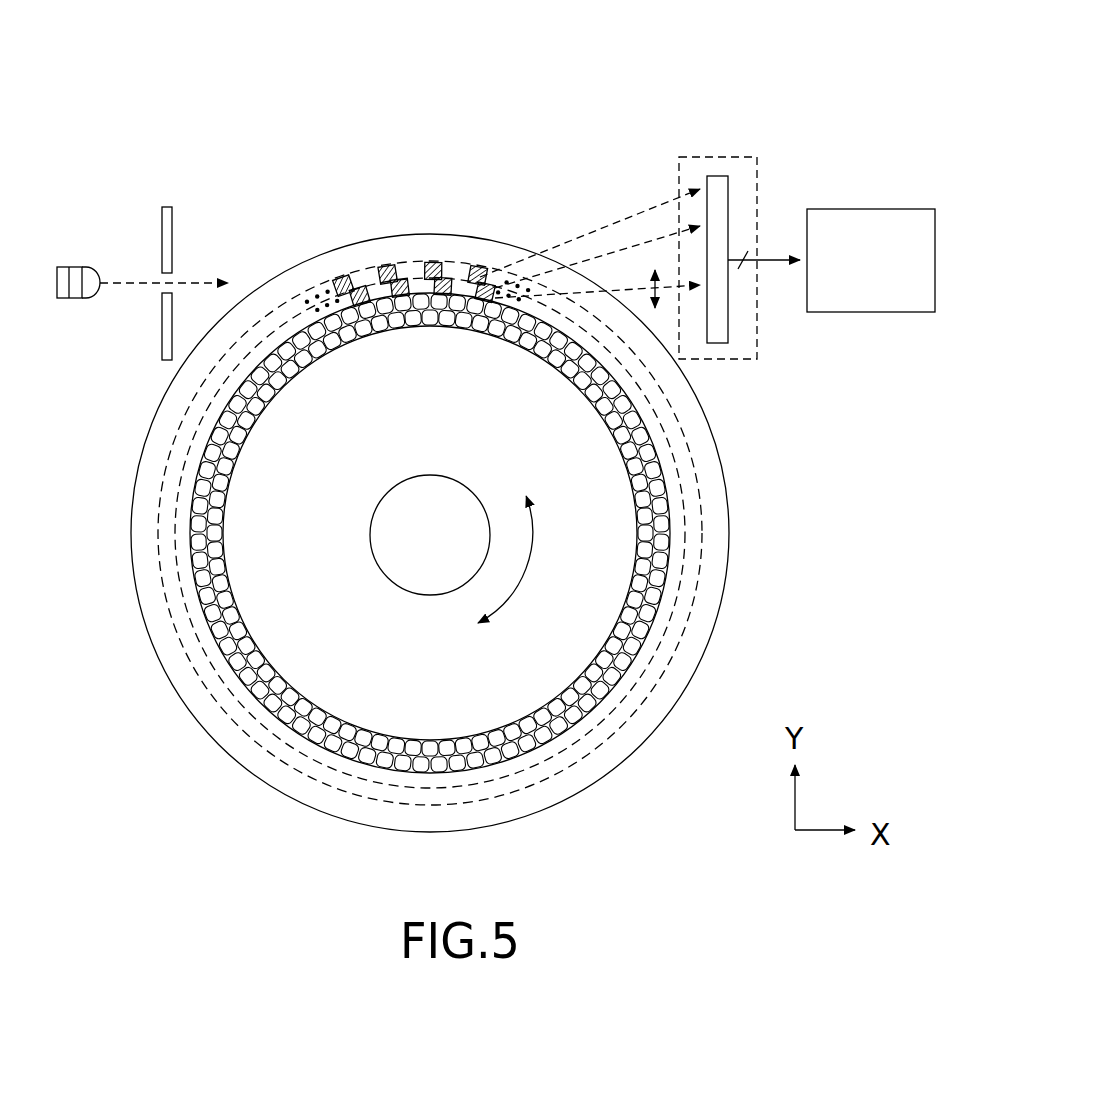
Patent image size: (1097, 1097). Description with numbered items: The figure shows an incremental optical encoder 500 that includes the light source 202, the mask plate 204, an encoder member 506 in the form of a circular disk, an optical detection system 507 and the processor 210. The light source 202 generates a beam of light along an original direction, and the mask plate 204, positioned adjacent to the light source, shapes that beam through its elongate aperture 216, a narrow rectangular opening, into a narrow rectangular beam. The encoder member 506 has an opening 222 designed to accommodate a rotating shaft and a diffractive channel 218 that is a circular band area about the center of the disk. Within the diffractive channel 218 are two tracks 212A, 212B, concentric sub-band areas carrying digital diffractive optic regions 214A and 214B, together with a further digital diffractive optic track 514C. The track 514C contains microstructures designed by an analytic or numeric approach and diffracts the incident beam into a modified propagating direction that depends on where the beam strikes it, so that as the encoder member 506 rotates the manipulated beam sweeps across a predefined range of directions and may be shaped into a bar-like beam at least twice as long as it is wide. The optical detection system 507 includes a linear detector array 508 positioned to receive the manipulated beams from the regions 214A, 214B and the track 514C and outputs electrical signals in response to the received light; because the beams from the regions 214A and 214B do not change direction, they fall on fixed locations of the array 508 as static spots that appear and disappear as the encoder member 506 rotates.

The incremental optical encoder 500 is at (787, 55).
The light source 202 is at (75, 267).
The mask plate 204 is at (167, 207).
The elongate aperture 216 is at (172, 278).
The digital diffractive optic region 214A is at (342, 276).
The digital diffractive optic region 214B is at (362, 288).
The diffractive channel 218 is at (414, 256).
The opening 222 is at (395, 487).
The track 212A is at (688, 462).
The track 212B is at (674, 508).
The encoder member 506 is at (734, 592).
The digital diffractive optic track 514C is at (492, 740).
The optical detection system 507 is at (699, 157).
The linear detector array 508 is at (717, 176).
The processor 210 is at (886, 209).